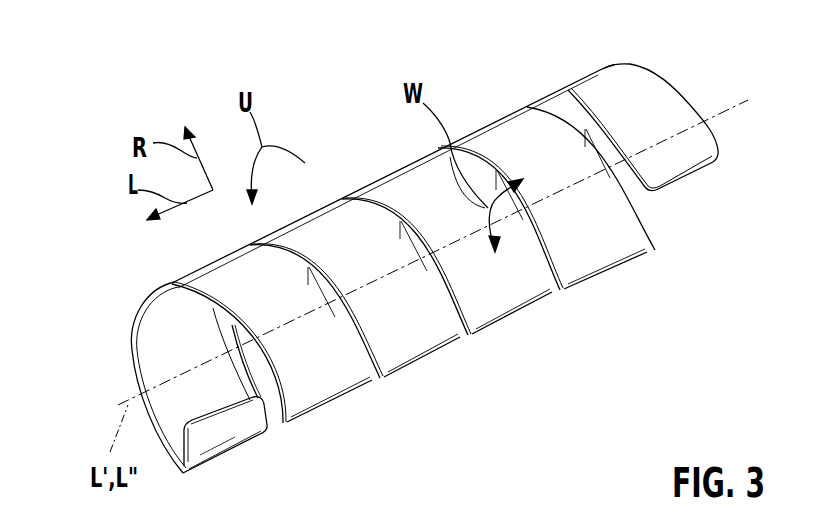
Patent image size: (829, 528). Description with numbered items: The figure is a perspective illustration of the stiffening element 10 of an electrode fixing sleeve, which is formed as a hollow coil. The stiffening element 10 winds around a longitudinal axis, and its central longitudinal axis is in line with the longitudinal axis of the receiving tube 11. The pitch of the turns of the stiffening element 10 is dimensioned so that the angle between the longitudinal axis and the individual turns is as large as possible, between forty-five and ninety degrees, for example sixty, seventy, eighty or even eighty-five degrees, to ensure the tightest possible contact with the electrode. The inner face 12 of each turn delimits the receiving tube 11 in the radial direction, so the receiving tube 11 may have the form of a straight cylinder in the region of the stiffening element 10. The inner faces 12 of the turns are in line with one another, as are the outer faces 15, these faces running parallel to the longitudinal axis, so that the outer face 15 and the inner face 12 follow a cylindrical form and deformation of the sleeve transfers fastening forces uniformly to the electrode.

The stiffening element 10 is at (400, 236).
The receiving tube 11 is at (712, 77).
The inner face 12 is at (163, 322).
The outer face 15 is at (412, 325).